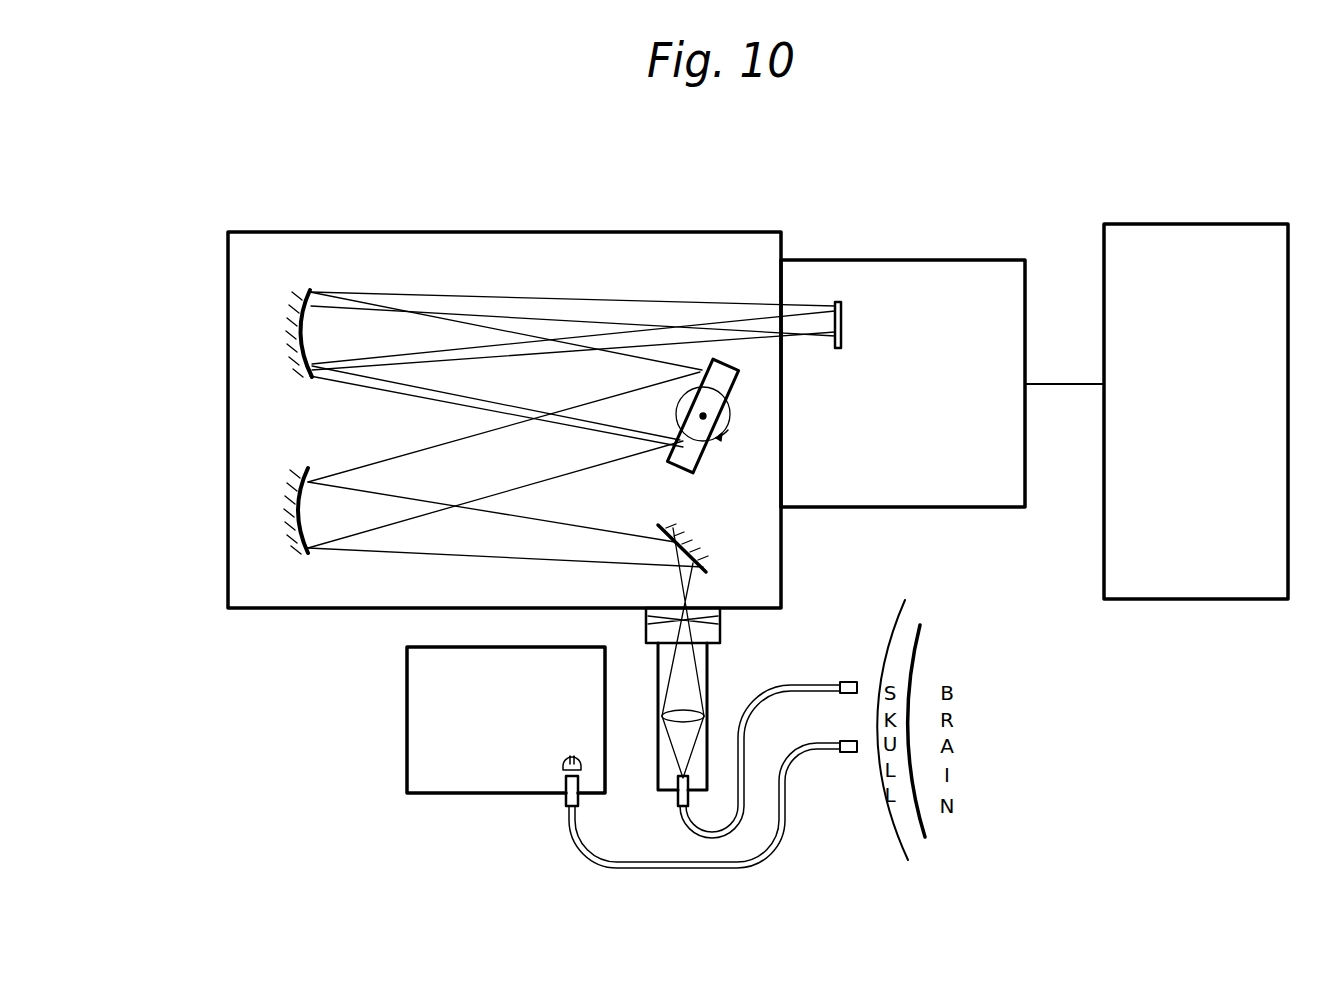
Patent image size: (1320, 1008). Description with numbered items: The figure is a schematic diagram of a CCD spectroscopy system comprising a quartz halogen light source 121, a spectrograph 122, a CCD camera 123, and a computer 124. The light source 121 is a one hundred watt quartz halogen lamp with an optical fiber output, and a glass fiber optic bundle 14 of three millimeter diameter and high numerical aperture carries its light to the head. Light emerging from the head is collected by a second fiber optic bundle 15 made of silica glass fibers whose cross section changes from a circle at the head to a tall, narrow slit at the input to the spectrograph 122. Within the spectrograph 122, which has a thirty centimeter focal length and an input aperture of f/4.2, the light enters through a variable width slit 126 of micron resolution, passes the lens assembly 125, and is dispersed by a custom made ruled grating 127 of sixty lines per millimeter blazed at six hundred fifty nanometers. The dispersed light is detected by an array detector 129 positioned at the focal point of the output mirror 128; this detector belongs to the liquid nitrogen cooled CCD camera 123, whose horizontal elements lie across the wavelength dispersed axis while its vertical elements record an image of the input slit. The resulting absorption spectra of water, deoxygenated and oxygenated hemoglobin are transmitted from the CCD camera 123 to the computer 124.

The glass fiber optic bundle 14 is at (760, 842).
The second fiber optic bundle 15 is at (812, 680).
The quartz halogen light source 121 is at (470, 795).
The spectrograph 122 is at (722, 230).
The CCD camera 123 is at (1017, 258).
The computer 124 is at (1207, 222).
The lens tube 125 is at (692, 707).
The variable width slit 126 is at (722, 626).
The ruled grating 127 is at (680, 538).
The output mirror 128 is at (707, 460).
The array detector 129 is at (843, 323).